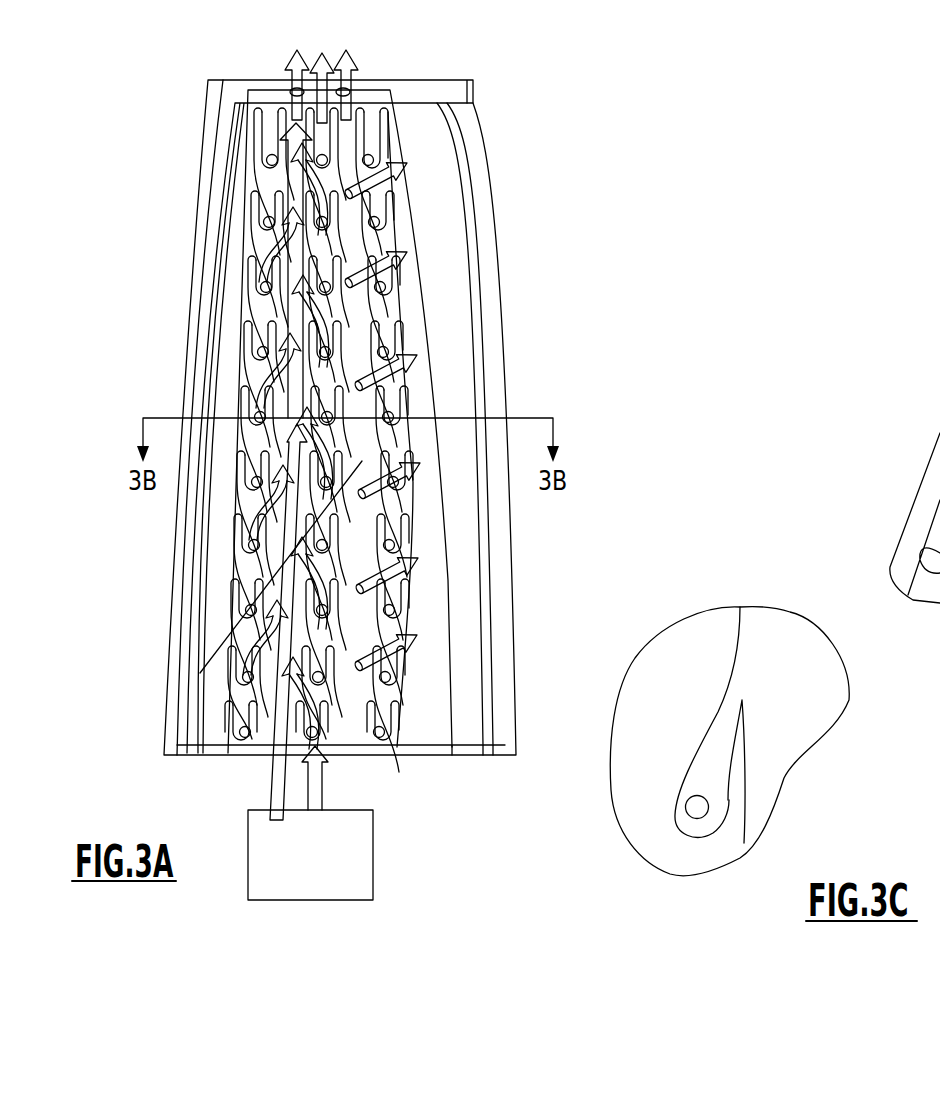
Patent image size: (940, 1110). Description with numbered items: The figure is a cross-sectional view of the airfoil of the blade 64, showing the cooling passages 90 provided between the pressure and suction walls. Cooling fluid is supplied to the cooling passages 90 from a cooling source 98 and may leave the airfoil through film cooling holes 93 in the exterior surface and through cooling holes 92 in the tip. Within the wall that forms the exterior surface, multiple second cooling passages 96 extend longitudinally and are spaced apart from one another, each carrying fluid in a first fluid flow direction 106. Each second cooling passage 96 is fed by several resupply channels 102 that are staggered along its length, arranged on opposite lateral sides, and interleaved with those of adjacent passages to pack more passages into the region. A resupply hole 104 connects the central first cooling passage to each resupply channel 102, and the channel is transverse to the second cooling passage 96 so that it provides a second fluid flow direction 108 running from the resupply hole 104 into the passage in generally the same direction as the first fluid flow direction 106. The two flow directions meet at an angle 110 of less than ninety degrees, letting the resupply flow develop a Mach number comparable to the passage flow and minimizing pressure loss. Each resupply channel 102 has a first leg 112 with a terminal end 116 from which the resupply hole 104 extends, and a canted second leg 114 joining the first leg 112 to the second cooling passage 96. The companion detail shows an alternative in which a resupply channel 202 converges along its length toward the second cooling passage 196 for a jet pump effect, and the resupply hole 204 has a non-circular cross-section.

In FIG. 3A, the blade 64 is at (487, 119).
In FIG. 3A, the cooling passages 90 is at (418, 119).
In FIG. 3A, the cooling holes 92 is at (343, 86).
In FIG. 3A, the film cooling holes 93 is at (352, 130).
In FIG. 3A, the second cooling passage 96 is at (360, 348).
In FIG. 3A, the cooling source 98 is at (375, 832).
In FIG. 3A, the resupply channel 102 is at (388, 344).
In FIG. 3A, the resupply hole 104 is at (262, 520).
In FIG. 3A, the first fluid flow direction 106 is at (291, 322).
In FIG. 3A, the second fluid flow direction 108 is at (265, 254).
In FIG. 3A, the angle 110 is at (347, 471).
In FIG. 3A, the first leg 112 is at (274, 470).
In FIG. 3A, the second leg 114 is at (317, 459).
In FIG. 3A, the terminal end 116 is at (246, 584).
In FIG. 3C, the second cooling passage 196 is at (787, 762).
In FIG. 3C, the resupply channel 202 is at (716, 810).
In FIG. 3C, the resupply hole 204 is at (697, 812).